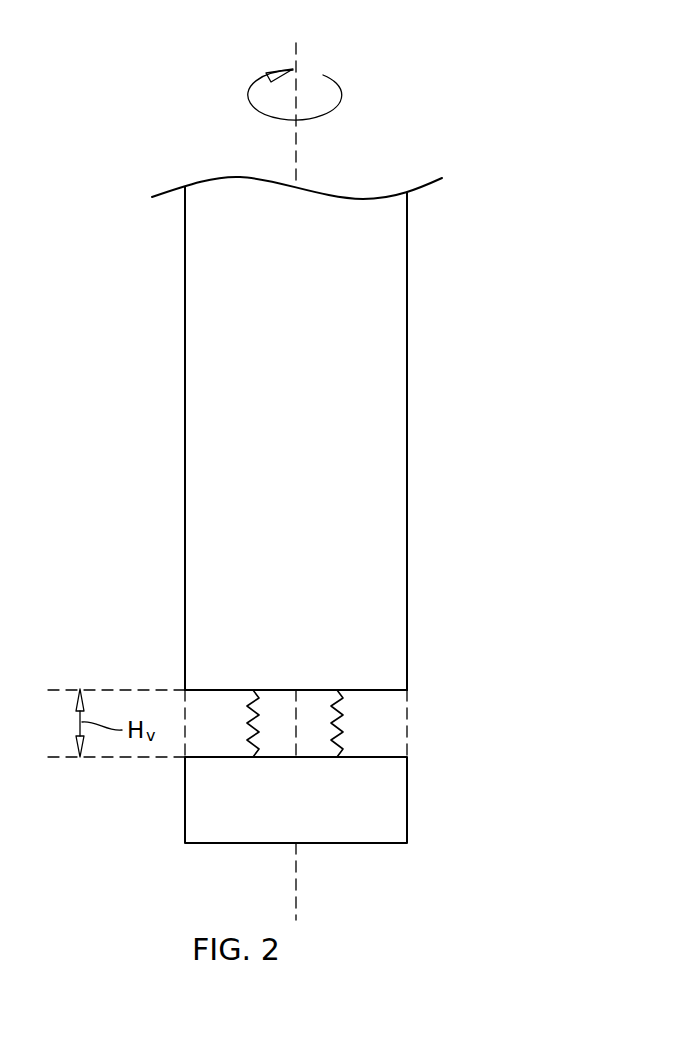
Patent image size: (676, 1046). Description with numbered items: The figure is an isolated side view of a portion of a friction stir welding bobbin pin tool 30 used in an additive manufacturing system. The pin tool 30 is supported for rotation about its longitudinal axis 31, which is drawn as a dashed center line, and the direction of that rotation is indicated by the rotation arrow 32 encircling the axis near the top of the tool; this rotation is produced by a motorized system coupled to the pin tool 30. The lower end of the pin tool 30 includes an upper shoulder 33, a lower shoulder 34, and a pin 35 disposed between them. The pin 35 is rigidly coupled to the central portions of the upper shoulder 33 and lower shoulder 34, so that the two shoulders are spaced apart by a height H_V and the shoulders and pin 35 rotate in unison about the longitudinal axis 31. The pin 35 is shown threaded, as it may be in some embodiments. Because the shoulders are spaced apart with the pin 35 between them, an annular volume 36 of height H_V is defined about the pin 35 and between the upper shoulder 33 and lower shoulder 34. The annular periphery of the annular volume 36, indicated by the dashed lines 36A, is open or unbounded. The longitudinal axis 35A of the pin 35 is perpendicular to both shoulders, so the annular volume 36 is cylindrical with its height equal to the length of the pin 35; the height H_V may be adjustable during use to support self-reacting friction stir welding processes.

The FSW bobbin pin tool 30 is at (556, 357).
The longitudinal axis 31 is at (296, 50).
The rotation arrow 32 is at (250, 93).
The upper shoulder 33 is at (372, 692).
The lower shoulder 34 is at (377, 758).
The pin 35 is at (340, 732).
The longitudinal axis of pin 35A is at (297, 702).
The annular volume 36 is at (215, 735).
The dashed lines 36A is at (183, 712).